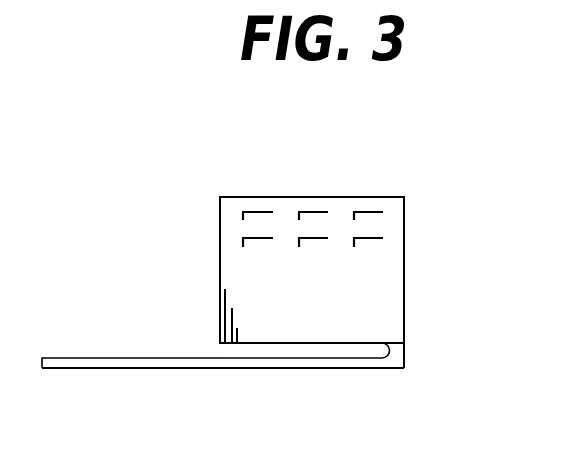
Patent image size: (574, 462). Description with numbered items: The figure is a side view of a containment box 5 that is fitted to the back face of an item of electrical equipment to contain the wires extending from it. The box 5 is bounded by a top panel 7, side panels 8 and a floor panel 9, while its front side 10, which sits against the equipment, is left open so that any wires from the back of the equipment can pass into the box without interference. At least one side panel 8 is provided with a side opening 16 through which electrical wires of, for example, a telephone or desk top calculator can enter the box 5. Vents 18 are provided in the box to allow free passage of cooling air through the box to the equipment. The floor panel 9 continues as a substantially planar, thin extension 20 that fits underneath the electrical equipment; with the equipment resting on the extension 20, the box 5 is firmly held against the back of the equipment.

The containment box 5 is at (412, 308).
The top panel 7 is at (286, 197).
The side panel 8 is at (305, 318).
The floor panel 9 is at (187, 369).
The front side 10 is at (220, 254).
The side opening 16 is at (258, 353).
The vents 18 is at (368, 218).
The extension 20 is at (95, 369).